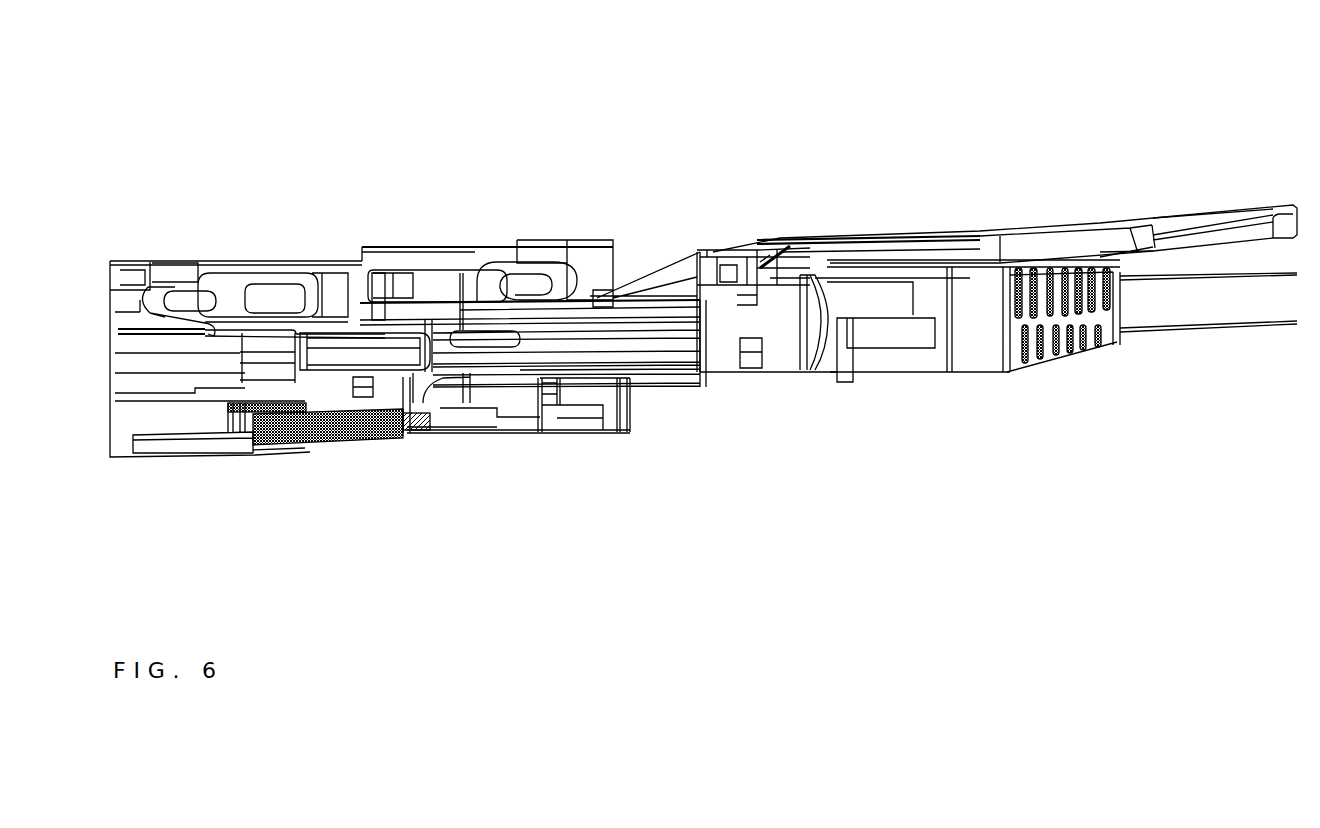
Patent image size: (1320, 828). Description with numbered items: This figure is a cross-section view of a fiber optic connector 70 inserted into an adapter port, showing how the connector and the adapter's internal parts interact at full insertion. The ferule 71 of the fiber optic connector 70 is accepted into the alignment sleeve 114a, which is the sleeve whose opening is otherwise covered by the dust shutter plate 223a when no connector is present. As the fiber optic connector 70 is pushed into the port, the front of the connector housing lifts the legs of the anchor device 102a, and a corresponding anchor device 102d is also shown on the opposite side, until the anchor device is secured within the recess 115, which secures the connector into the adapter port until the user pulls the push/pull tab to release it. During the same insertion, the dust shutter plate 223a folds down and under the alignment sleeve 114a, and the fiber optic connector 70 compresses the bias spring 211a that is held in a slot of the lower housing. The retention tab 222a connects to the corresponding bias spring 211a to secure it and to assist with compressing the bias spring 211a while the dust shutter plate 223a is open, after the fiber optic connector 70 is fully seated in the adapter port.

The fiber optic connector 70 is at (868, 200).
The ferule 71 is at (452, 343).
The anchor device 102a is at (505, 262).
The anchor device 102d is at (255, 300).
The alignment sleeve 114a is at (365, 350).
The recess 115 is at (593, 300).
The bias spring 211a is at (293, 425).
The retention tab 222a is at (348, 417).
The dust shutter plate 223a is at (407, 382).